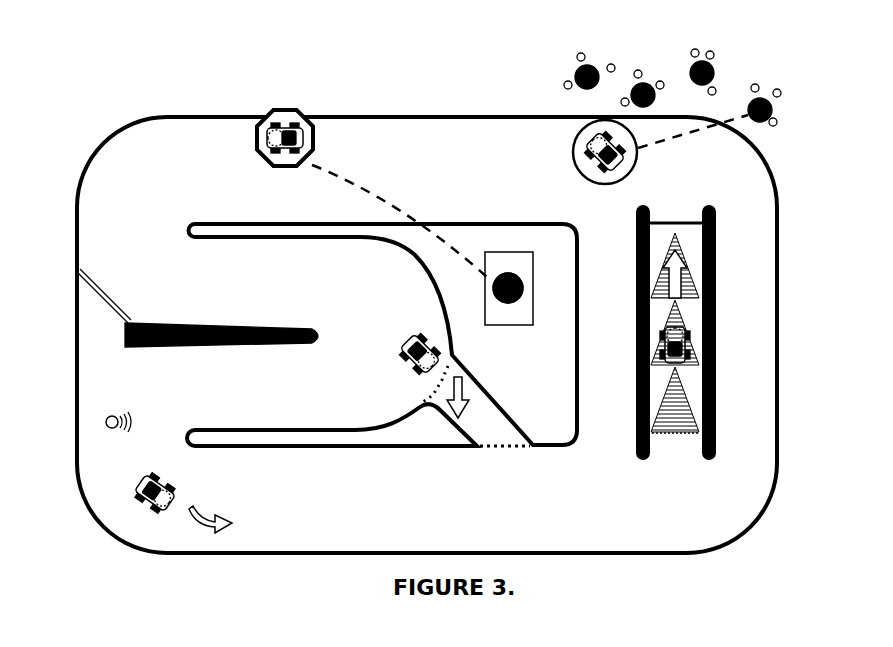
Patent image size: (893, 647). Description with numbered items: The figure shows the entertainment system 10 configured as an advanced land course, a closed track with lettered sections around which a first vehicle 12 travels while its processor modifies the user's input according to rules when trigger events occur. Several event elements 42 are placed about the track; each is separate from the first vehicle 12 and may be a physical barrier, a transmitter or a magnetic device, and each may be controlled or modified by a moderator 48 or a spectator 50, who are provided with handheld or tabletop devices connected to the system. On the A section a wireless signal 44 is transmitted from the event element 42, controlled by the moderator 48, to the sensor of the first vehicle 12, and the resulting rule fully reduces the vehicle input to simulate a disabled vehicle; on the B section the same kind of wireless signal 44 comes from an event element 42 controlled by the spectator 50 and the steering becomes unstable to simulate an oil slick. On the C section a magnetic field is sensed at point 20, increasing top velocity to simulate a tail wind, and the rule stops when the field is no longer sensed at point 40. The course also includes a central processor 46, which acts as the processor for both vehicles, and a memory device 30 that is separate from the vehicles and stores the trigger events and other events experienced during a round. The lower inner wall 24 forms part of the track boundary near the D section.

The entertainment system 10 is at (100, 62).
The first vehicle 12 is at (249, 137).
The point 20 is at (678, 413).
The track wall 24 is at (443, 418).
The memory device 30 is at (527, 259).
The point 40 is at (691, 241).
The event element 42 is at (100, 300).
The wireless signal 44 is at (347, 196).
The central processor 46 is at (498, 251).
The moderator 48 is at (512, 305).
The spectator 50 is at (732, 68).